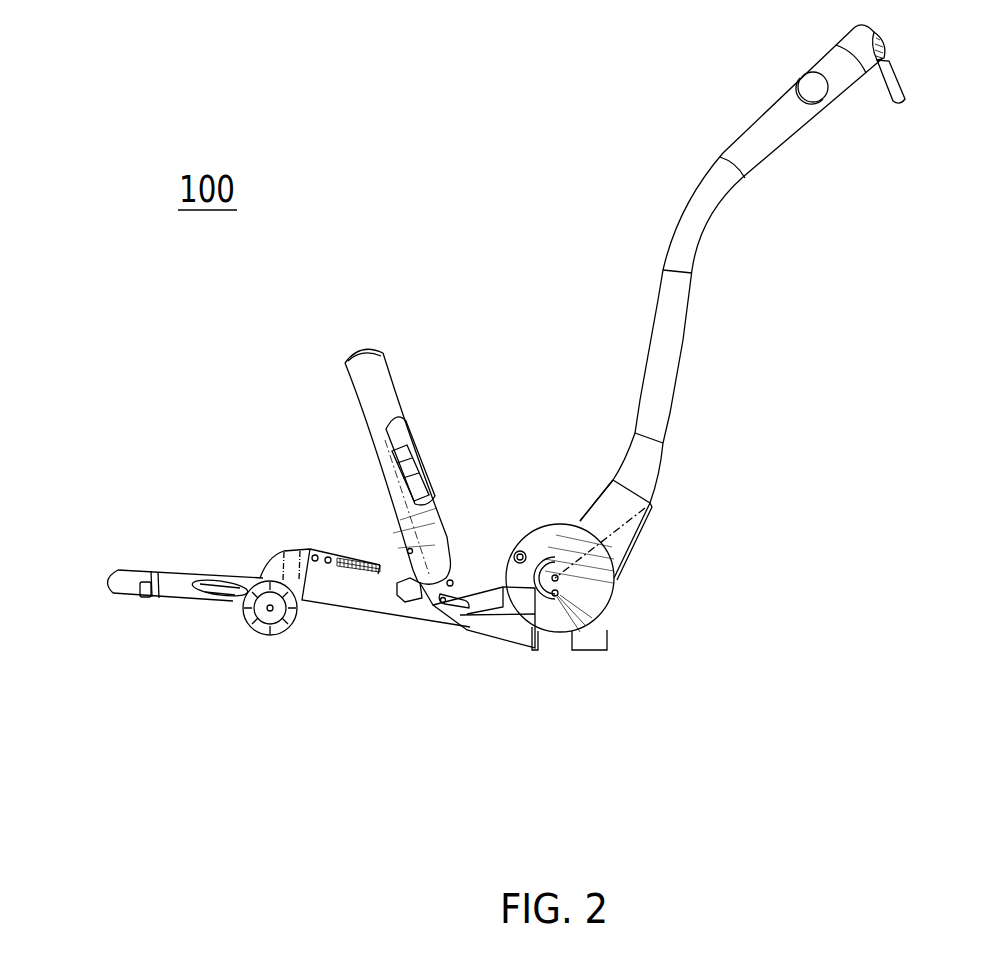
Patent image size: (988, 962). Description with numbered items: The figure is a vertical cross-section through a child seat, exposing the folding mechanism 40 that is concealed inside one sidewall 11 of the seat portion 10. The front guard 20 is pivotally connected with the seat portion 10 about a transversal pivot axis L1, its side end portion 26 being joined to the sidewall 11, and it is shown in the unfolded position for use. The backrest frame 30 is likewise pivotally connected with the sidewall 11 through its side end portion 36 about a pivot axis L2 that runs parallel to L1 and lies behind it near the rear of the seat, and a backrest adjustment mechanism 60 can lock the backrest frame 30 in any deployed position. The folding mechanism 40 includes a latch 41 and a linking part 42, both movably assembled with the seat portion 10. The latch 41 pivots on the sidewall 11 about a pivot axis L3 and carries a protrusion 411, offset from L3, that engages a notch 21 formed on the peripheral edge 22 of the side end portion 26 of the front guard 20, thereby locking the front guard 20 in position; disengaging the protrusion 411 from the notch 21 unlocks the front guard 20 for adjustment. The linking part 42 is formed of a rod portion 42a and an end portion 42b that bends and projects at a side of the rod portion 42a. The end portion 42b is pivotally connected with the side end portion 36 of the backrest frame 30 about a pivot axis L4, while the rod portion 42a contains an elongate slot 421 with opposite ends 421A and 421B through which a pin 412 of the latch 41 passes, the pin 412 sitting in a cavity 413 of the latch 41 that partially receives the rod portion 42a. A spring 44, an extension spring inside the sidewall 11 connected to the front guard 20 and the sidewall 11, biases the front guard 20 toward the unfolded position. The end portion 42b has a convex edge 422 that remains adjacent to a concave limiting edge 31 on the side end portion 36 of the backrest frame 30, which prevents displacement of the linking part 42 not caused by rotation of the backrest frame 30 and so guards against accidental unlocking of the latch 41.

The seat portion 10 is at (282, 550).
The sidewall 11 is at (328, 598).
The front guard 20 is at (393, 377).
The notch 21 is at (408, 549).
The peripheral edge 22 is at (378, 573).
The side end portion 26 is at (452, 585).
The backrest frame 30 is at (697, 313).
The limiting edge 31 is at (557, 592).
The side end portion 36 is at (615, 585).
The folding mechanism 40 is at (534, 606).
The latch 41 is at (424, 688).
The protrusion 411 is at (400, 592).
The pin 412 is at (455, 617).
The cavity 413 is at (425, 604).
The linking part 42 is at (596, 587).
The rod portion 42a is at (480, 612).
The end portion 42b is at (556, 596).
The elongate slot 421 is at (526, 553).
The end of elongate slot 421A is at (505, 565).
The end of elongate slot 421B is at (455, 590).
The edge 422 is at (560, 600).
The spring 44 is at (340, 553).
The backrest adjustment mechanism 60 is at (580, 521).
The pivot axis L1 is at (442, 570).
The pivot axis L2 is at (560, 587).
The pivot axis L3 is at (468, 575).
The pivot axis L4 is at (558, 597).